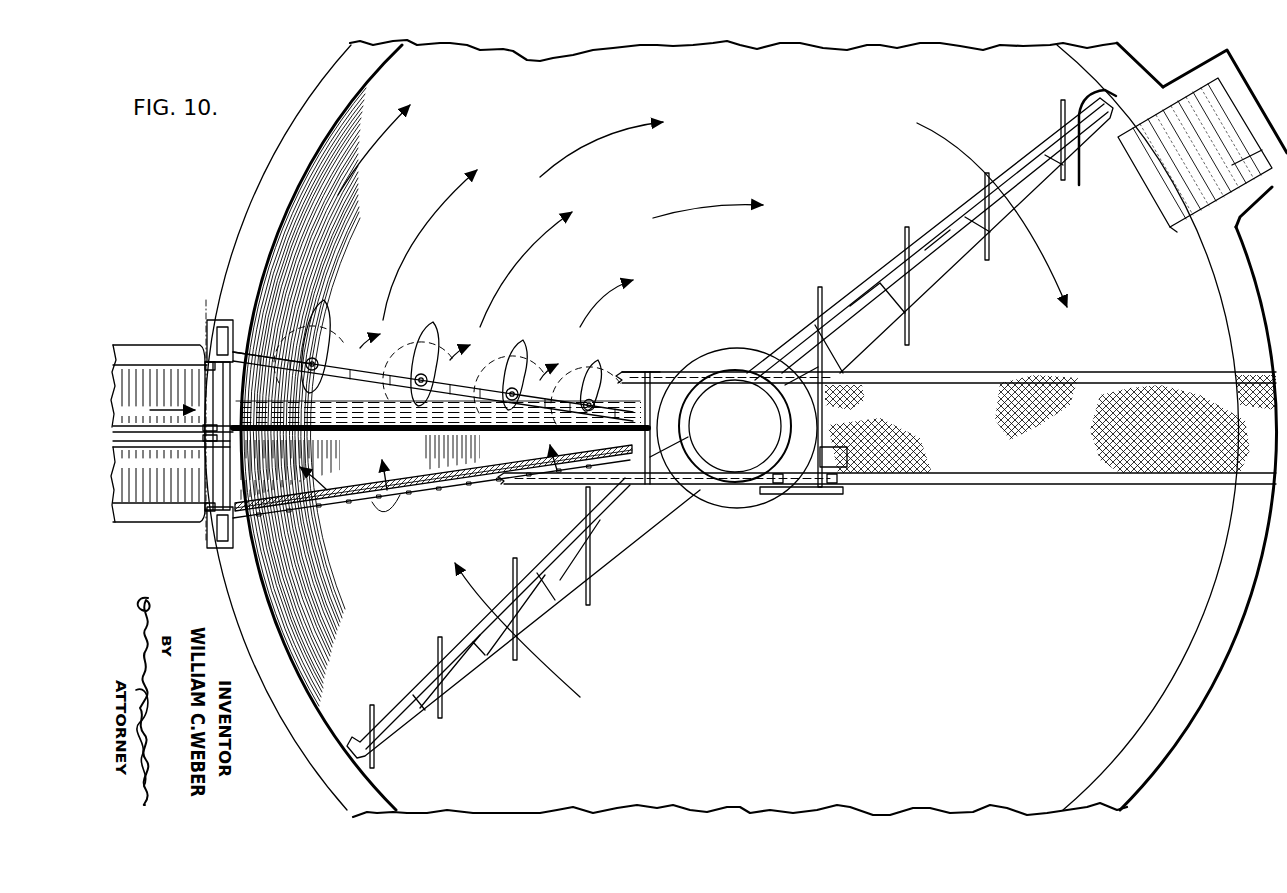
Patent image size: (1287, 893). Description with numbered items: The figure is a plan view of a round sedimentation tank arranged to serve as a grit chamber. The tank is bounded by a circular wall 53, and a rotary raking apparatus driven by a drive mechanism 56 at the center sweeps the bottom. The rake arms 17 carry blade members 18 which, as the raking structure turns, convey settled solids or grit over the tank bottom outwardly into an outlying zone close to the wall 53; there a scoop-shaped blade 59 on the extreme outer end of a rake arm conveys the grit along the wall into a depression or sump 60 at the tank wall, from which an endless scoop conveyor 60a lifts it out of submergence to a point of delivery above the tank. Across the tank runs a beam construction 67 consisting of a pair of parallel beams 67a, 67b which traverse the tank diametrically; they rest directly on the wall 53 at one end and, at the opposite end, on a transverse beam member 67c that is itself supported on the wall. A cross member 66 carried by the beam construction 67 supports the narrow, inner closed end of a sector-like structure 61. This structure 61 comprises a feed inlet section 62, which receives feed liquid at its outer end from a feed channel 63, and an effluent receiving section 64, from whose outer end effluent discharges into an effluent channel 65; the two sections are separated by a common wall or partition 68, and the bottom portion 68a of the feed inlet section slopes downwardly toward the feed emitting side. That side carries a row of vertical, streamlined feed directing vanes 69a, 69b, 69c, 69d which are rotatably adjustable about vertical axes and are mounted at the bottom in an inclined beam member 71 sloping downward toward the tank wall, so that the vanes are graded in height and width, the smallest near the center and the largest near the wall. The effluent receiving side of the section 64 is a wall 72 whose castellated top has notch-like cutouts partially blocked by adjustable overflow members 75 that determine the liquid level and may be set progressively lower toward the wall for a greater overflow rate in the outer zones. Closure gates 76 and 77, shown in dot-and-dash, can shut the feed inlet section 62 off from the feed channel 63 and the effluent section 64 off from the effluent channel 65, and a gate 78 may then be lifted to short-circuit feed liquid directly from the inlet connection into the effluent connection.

The rake arm 17 is at (872, 282).
The blade member 18 is at (912, 322).
The tank wall 53 is at (1183, 740).
The drive mechanism 56 is at (748, 428).
The scoop-shaped blade 59 is at (1076, 108).
The sump 60 is at (1180, 215).
The endless scoop conveyor 60a is at (1232, 172).
The sector-like structure 61 is at (472, 488).
The feed inlet section 62 is at (433, 388).
The feed channel 63 is at (105, 390).
The effluent receiving section 64 is at (388, 492).
The effluent channel 65 is at (205, 482).
The cross member 66 is at (662, 382).
The beam construction 67 is at (645, 372).
The beam 67a is at (622, 371).
The beam 67b is at (536, 485).
The transverse beam member 67c is at (213, 336).
The partition 68 is at (288, 440).
The bottom portion of feed inlet section 68a is at (438, 403).
The feed directing vane 69a is at (328, 317).
The feed directing vane 69b is at (432, 340).
The feed directing vane 69c is at (518, 371).
The feed directing vane 69d is at (593, 371).
The inclined beam member 71 is at (420, 372).
The wall 72 is at (437, 470).
The adjustable overflow member 75 is at (390, 504).
The closure gate 76 is at (200, 382).
The closure gate 77 is at (200, 487).
The closure gate 78 is at (205, 458).